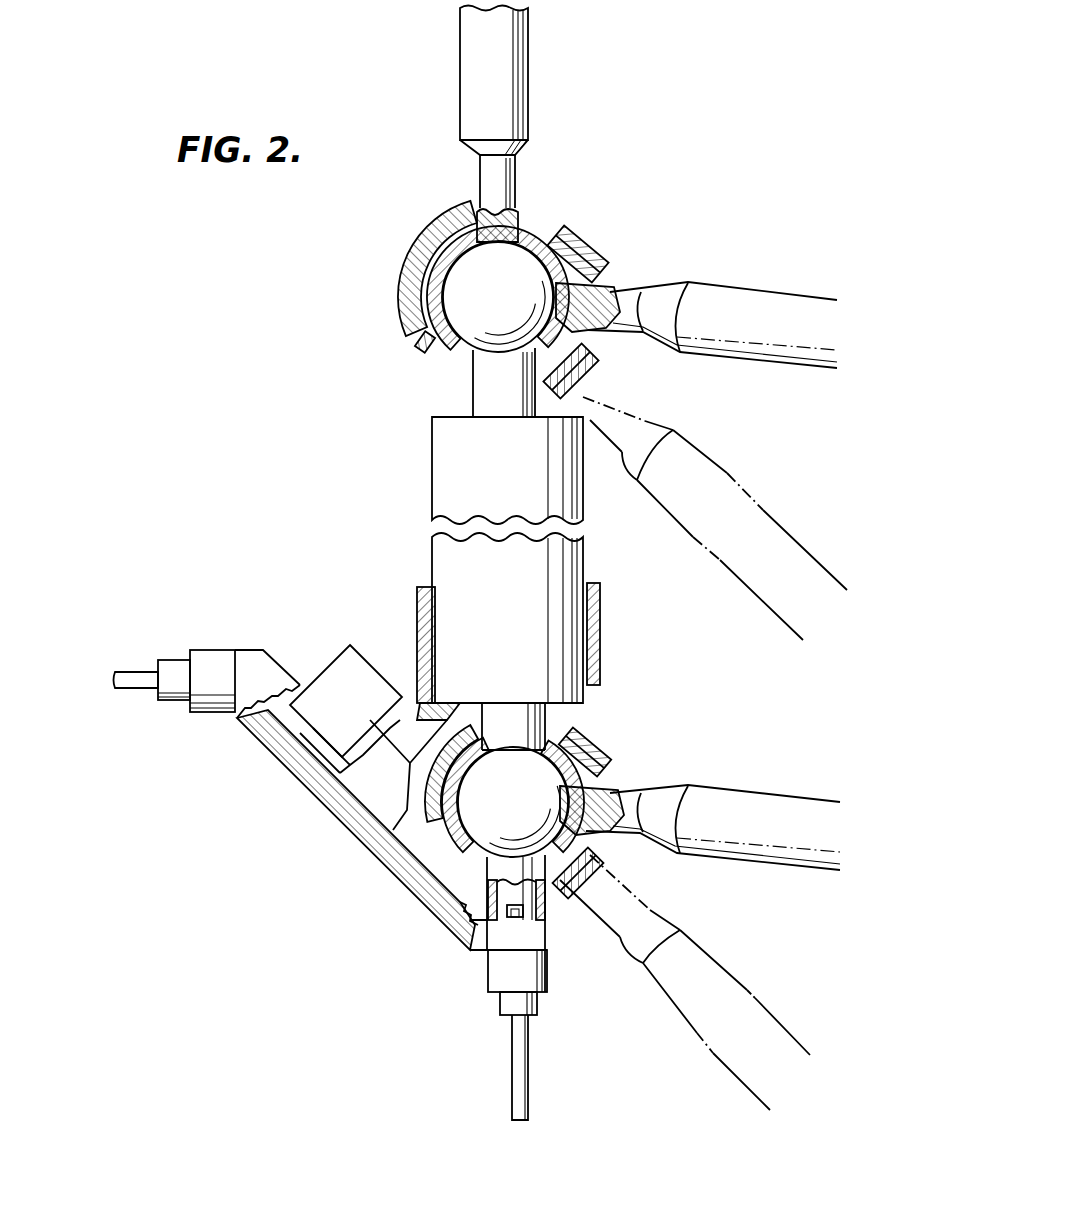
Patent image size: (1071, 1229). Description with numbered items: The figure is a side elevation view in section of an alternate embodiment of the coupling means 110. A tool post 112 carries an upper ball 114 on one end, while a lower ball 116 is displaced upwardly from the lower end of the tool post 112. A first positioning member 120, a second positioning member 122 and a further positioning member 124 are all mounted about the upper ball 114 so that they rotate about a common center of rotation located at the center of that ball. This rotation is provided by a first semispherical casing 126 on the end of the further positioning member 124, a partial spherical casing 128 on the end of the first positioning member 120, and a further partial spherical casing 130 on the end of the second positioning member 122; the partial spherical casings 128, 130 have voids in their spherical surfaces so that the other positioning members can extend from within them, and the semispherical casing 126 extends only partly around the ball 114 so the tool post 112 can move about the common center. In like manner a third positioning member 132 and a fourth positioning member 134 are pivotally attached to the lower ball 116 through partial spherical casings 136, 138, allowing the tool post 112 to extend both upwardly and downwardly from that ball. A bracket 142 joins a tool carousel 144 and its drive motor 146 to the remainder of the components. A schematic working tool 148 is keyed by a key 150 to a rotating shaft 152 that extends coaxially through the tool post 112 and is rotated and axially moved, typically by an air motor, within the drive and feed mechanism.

The housing block 110 is at (455, 457).
The tool post 112 is at (488, 390).
The upper ball 114 is at (520, 298).
The lower ball 116 is at (487, 822).
The first positioning member 120 is at (745, 300).
The second positioning member 122 is at (730, 470).
The further positioning member 124 is at (505, 90).
The first semispherical casing 126 is at (535, 233).
The partial spherical casing 128 is at (420, 342).
The further partial spherical casing 130 is at (422, 238).
The third positioning member 132 is at (745, 800).
The fourth positioning member 134 is at (735, 975).
The partial spherical casing 136 is at (580, 757).
The partial spherical casing 138 is at (598, 763).
The bracket 142 is at (425, 610).
The tool carousel 144 is at (335, 800).
The drive motor 146 is at (337, 668).
The working tool 148 is at (500, 970).
The key 150 is at (520, 917).
The rotating shaft 152 is at (455, 935).